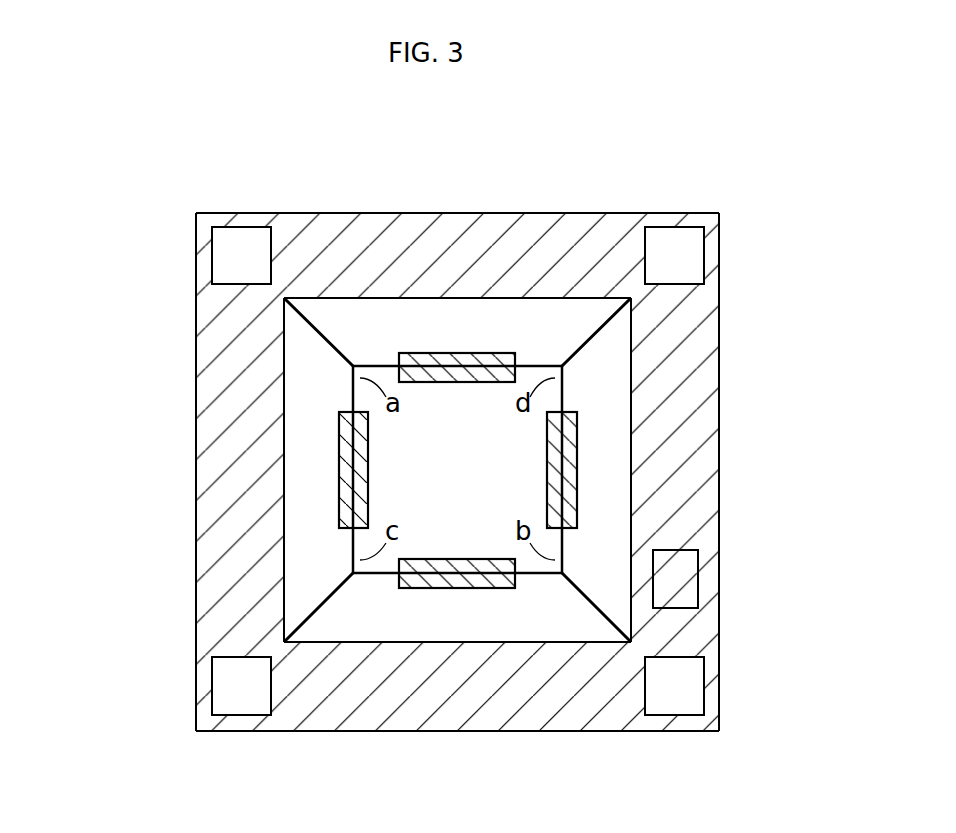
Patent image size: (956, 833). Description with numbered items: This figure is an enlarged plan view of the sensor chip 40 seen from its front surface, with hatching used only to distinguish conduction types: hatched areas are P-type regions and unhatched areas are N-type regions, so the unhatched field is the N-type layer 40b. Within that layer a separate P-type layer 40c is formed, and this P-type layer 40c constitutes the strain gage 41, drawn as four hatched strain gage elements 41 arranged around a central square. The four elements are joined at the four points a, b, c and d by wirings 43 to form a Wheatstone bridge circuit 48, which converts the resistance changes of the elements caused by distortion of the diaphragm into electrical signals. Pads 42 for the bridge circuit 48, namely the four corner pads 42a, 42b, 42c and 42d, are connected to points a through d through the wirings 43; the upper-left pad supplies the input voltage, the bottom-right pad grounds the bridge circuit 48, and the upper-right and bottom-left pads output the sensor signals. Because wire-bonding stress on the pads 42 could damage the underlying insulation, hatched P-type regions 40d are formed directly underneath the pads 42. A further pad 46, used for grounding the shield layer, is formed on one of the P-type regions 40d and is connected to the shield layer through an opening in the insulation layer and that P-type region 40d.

The sensor chip 40 is at (724, 326).
The N-type layer 40b is at (307, 542).
The P-type layer 40c is at (462, 365).
The P-type regions 40d is at (678, 490).
The strain gage 41 is at (458, 471).
The pads 42 is at (459, 463).
The pad 42a is at (232, 253).
The pad 42b is at (677, 680).
The pad 42c is at (237, 682).
The pad 42d is at (683, 253).
The wirings 43 is at (322, 330).
The pad for grounding the shield layer 46 is at (678, 570).
The Wheatstone bridge circuit 48 is at (330, 421).